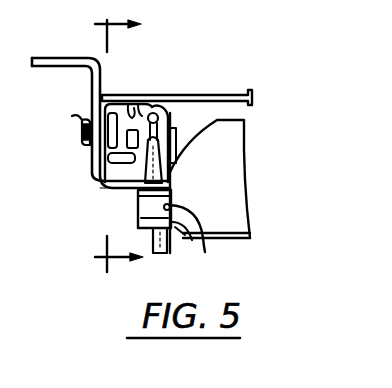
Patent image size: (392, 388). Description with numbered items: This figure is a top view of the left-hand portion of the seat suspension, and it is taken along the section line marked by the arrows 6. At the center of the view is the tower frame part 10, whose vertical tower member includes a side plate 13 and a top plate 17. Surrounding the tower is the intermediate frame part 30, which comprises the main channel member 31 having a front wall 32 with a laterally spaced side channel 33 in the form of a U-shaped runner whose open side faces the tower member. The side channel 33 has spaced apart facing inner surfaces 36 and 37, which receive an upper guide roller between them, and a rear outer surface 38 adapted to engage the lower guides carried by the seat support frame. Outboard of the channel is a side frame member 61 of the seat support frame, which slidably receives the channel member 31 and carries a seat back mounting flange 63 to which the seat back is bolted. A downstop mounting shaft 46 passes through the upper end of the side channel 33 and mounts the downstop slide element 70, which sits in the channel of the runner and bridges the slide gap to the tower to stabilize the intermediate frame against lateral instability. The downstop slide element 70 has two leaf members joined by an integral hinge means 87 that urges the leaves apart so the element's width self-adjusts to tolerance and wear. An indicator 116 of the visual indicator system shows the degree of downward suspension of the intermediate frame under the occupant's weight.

The section line 6- 6 is at (119, 142).
The tower frame part 10 is at (238, 238).
The side plate 13 is at (203, 249).
The top plate 17 is at (213, 160).
The intermediate frame part 30 is at (218, 89).
The main channel member 31 is at (237, 92).
The front wall 32 is at (177, 93).
The side channel 33 is at (103, 188).
The inner surface 36 is at (103, 96).
The inner surface 37 is at (114, 193).
The rear outer surface 38 is at (132, 191).
The downstop mounting shaft 46 is at (74, 117).
The side frame member 61 is at (89, 78).
The seat back mounting flange 63 is at (50, 57).
The downstop slide element 70 is at (131, 108).
The integral hinge means 87 is at (176, 119).
The indicator 116 is at (160, 254).